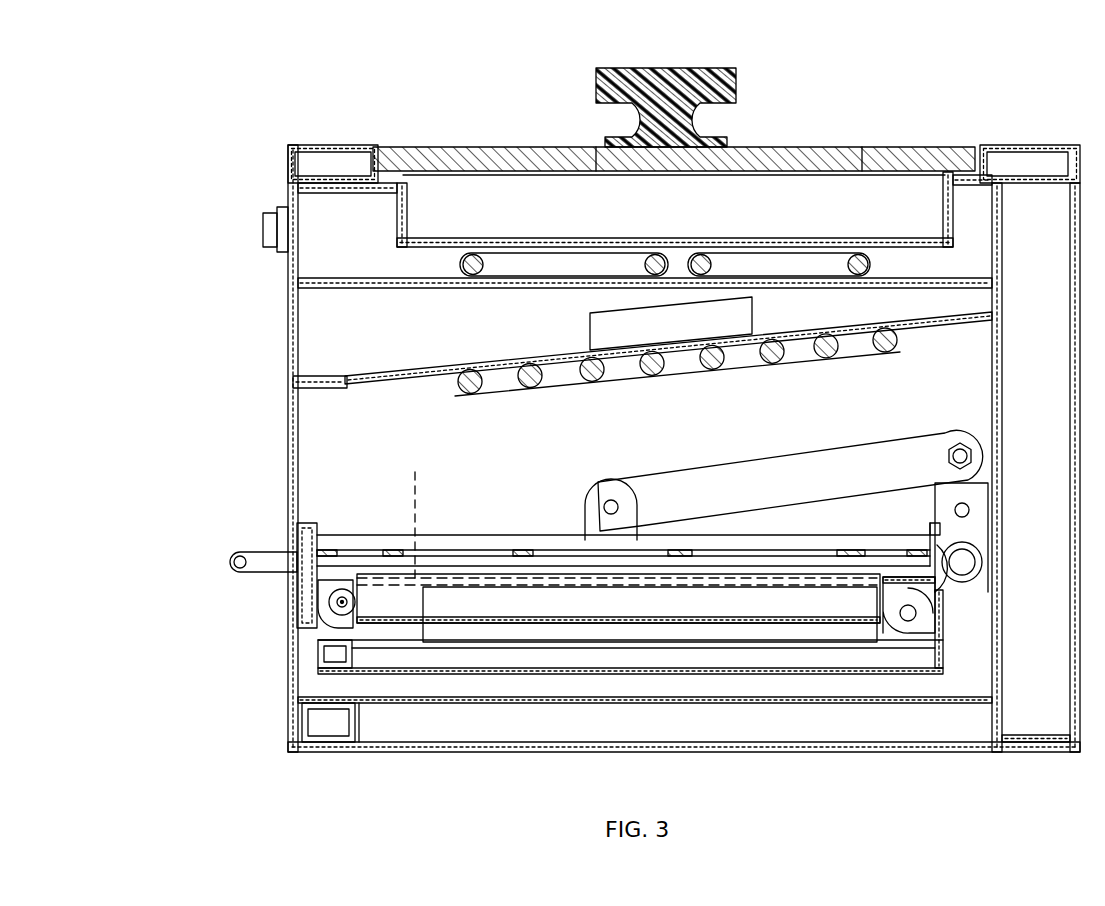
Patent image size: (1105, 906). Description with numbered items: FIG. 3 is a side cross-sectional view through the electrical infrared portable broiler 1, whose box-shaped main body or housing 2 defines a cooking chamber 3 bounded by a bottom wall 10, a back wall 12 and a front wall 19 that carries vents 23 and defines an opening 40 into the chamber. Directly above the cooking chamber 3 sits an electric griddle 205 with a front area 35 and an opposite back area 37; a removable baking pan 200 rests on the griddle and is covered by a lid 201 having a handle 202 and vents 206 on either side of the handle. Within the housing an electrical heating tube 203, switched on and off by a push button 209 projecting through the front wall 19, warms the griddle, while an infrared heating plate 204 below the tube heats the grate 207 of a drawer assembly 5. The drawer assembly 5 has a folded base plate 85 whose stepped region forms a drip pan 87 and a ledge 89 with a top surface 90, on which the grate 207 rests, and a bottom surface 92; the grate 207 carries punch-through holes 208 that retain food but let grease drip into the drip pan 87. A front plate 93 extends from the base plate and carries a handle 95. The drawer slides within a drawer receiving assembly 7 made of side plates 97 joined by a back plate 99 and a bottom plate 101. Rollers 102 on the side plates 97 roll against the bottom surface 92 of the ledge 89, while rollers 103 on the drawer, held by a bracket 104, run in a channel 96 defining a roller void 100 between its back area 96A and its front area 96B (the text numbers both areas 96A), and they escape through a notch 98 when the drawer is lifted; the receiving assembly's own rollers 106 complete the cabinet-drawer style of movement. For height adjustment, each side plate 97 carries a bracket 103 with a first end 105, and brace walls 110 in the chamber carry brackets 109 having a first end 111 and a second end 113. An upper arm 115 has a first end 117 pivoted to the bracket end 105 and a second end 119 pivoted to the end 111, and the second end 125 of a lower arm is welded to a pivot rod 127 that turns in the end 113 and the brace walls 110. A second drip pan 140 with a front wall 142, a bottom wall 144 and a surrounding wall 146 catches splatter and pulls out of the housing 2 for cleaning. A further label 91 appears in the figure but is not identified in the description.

The electrical infrared portable broiler 1 is at (140, 185).
The main body or housing 2 is at (185, 135).
The cooking chamber 3 is at (315, 420).
The drawer assembly 5 is at (298, 525).
The drawer receiving assembly 7 is at (800, 530).
The bottom wall 10 is at (292, 728).
The back wall 12 is at (990, 388).
The front wall 19 is at (285, 195).
The vents 23 is at (296, 335).
The front area 35 is at (362, 145).
The back area 37 is at (1005, 140).
The opening 40 is at (300, 460).
The base plate 85 is at (760, 612).
The drip pan 87 is at (785, 673).
The ledge 89 is at (440, 570).
The top surface 90 is at (455, 524).
The guide line 91 is at (345, 510).
The bottom surface 92 is at (415, 516).
The front plate 93 is at (300, 596).
The handle 95 is at (232, 556).
The channel 96 is at (478, 650).
The frame section 96B is at (630, 691).
The back area of channel 96A is at (912, 640).
The side plates 97 is at (498, 555).
The notch 98 is at (890, 542).
The back plate 99 is at (938, 605).
The roller void 100 is at (645, 635).
The bottom plate 101 is at (828, 678).
The rollers 102 is at (322, 608).
The bracket 103 is at (585, 490).
The bracket 104 is at (922, 615).
The first end 105 is at (611, 478).
The rollers 106 is at (915, 632).
The brackets 109 is at (990, 488).
The brace walls 110 is at (398, 438).
The first end 111 is at (972, 440).
The second end 113 is at (975, 570).
The upper arm 115 is at (808, 455).
The first end 117 is at (648, 518).
The second end 119 is at (925, 452).
The second end 125 is at (965, 545).
The pivot rod 127 is at (975, 590).
The second drip pan 140 is at (610, 650).
The front wall 142 is at (320, 650).
The bottom wall 144 is at (560, 652).
The surrounding wall 146 is at (372, 698).
The removable baking pan 200 is at (750, 240).
The lid 201 is at (855, 147).
The handle 202 is at (665, 68).
The electrical heating tube 203 is at (870, 262).
The infrared heating plate 204 is at (897, 342).
The electric griddle 205 is at (460, 257).
The vents 206 is at (597, 150).
The grate 207 is at (396, 548).
The punch-through holes 208 is at (570, 542).
The push button 209 is at (262, 232).